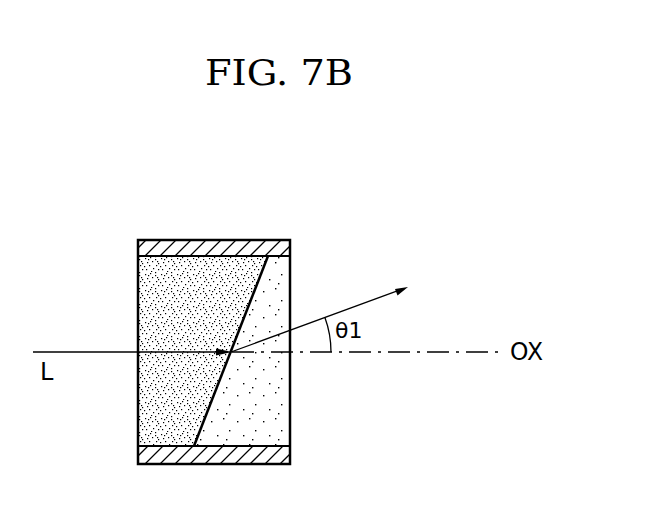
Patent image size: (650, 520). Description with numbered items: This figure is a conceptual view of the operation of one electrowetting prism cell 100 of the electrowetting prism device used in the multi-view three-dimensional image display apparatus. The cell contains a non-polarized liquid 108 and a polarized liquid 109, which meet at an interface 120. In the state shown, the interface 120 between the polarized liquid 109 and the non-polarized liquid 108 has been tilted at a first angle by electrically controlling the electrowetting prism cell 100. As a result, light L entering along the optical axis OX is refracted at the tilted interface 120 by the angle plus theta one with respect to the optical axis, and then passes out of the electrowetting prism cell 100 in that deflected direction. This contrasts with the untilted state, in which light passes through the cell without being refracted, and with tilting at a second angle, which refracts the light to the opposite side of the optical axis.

The electrowetting prism cell 100 is at (112, 226).
The non-polarized liquid 108 is at (158, 308).
The polarized liquid 109 is at (282, 403).
The interface 120 is at (253, 298).